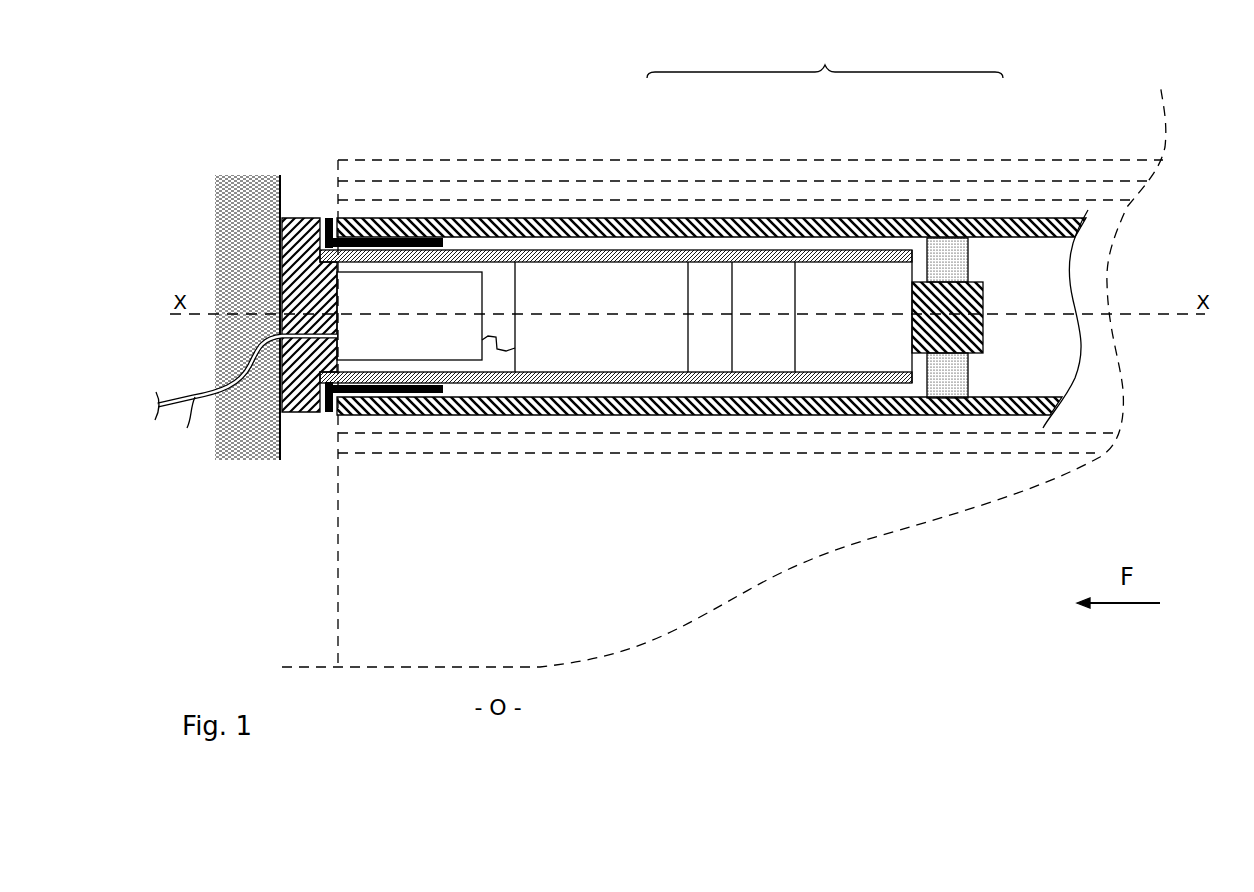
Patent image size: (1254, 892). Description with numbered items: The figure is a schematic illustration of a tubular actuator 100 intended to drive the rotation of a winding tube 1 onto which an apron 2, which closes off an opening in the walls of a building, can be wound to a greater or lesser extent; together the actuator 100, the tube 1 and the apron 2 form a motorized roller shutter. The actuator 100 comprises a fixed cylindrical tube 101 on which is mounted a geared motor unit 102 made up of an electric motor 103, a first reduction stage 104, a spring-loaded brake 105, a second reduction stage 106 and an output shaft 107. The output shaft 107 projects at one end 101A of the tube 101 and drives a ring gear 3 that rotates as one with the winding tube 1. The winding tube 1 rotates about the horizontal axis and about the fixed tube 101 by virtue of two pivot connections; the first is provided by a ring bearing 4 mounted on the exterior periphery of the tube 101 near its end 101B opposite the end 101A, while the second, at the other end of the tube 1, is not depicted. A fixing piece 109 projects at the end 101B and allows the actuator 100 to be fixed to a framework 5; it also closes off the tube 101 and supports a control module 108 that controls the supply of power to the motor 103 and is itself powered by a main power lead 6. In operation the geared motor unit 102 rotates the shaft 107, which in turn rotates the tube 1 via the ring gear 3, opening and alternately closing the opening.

The winding tube 1 is at (1072, 238).
The apron 2 is at (1037, 170).
The ring gear 3 is at (948, 372).
The ring bearing 4 is at (365, 238).
The framework 5 is at (242, 195).
The main power lead 6 is at (195, 405).
The tubular actuator 100 is at (693, 383).
The fixed cylindrical tube 101 is at (577, 252).
The end of the tube 101A is at (913, 378).
The end of the tube 101B is at (320, 377).
The geared motor unit 102 is at (825, 56).
The electric motor 103 is at (640, 285).
The first reduction stage 104 is at (712, 285).
The spring-loaded brake 105 is at (765, 285).
The second reduction stage 106 is at (853, 285).
The output shaft 107 is at (942, 302).
The control module 108 is at (445, 285).
The fixing piece 109 is at (322, 215).